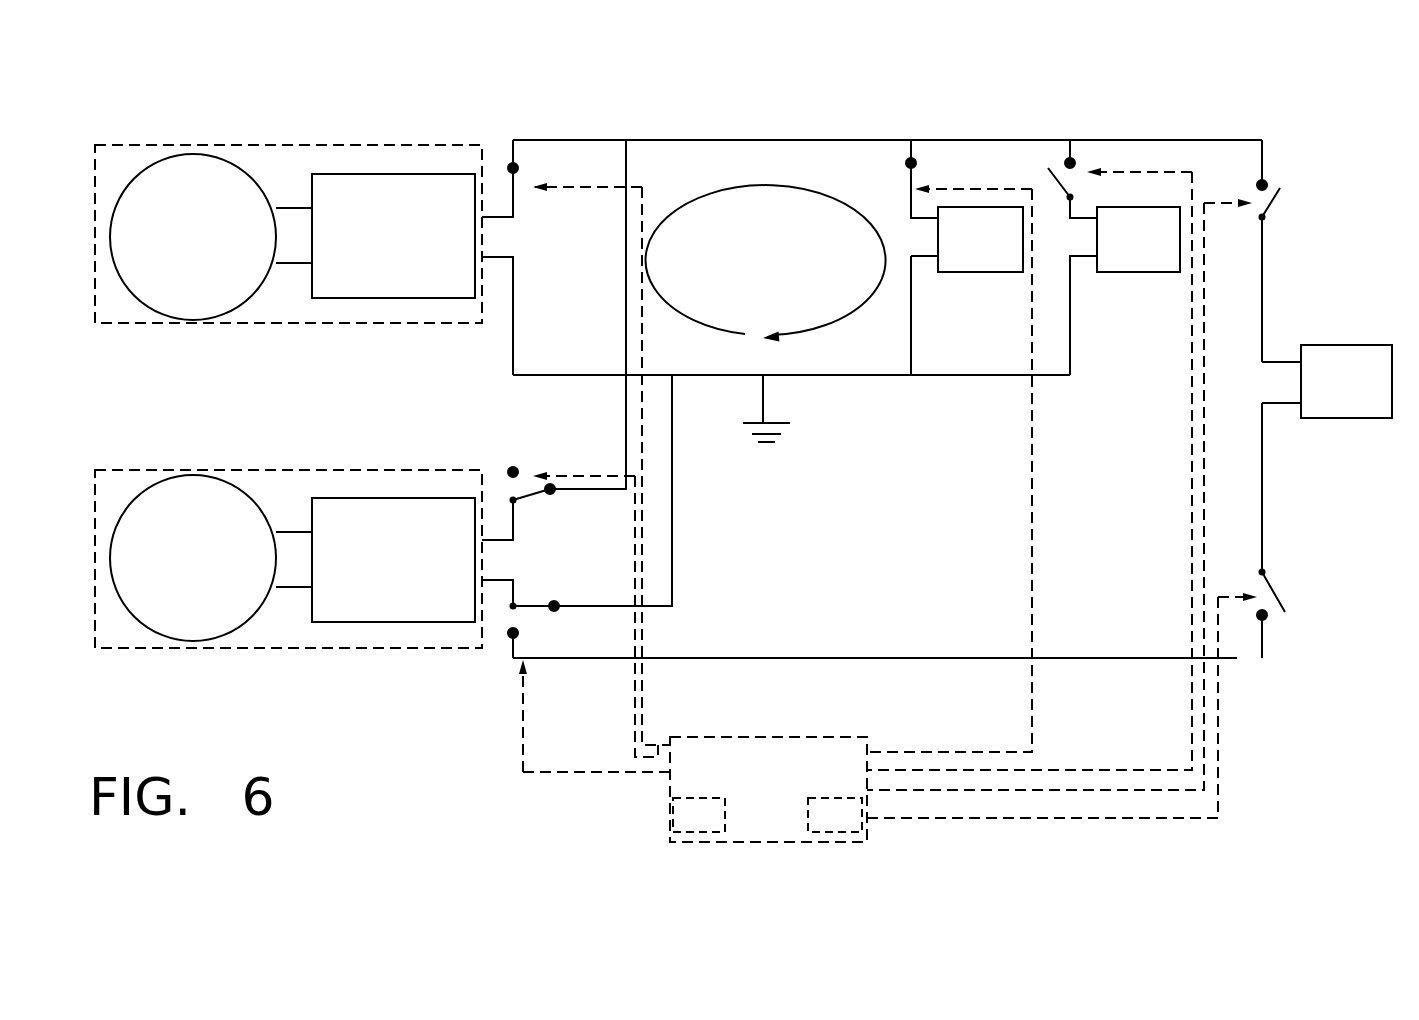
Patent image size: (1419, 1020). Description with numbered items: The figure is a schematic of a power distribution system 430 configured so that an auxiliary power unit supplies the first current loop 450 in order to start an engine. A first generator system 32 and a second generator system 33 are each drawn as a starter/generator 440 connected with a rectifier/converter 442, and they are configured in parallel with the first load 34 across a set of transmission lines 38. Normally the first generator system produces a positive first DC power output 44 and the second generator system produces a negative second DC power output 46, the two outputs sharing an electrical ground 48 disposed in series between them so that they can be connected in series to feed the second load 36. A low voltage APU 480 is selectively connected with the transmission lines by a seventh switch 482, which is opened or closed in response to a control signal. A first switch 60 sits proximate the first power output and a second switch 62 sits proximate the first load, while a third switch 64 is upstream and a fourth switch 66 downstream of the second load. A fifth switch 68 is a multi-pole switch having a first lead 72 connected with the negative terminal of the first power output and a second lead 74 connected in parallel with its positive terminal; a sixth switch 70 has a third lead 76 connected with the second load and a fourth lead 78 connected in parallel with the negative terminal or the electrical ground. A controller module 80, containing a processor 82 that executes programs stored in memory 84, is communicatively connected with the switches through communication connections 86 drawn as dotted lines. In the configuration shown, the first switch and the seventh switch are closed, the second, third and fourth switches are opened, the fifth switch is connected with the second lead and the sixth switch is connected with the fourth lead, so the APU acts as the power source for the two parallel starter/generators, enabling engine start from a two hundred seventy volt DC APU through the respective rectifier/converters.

The power distribution system 430 is at (641, 53).
The first generator system 32 is at (193, 145).
The second generator system 33 is at (193, 648).
The starter/generator 440 is at (217, 196).
The rectifier/converter 442 is at (370, 216).
The first DC power output 44 is at (569, 258).
The first switch 60 is at (532, 180).
The transmission lines 38 is at (945, 140).
The first current loop 450 is at (722, 198).
The electrical ground 48 is at (782, 441).
The seventh switch 482 is at (895, 170).
The auxiliary power unit 480 is at (948, 207).
The second switch 62 is at (1086, 190).
The first load 34 is at (1113, 272).
The third switch 64 is at (1298, 205).
The second load 36 is at (1346, 418).
The fourth switch 66 is at (1296, 618).
The first lead 72 is at (513, 472).
The second lead 74 is at (540, 470).
The fifth switch 68 is at (545, 500).
The sixth switch 70 is at (536, 626).
The fourth lead 78 is at (554, 606).
The third lead 76 is at (513, 633).
The second DC power output 46 is at (611, 567).
The communication connections 86 is at (627, 720).
The controller module 80 is at (747, 828).
The processor 82 is at (682, 828).
The memory 84 is at (818, 828).